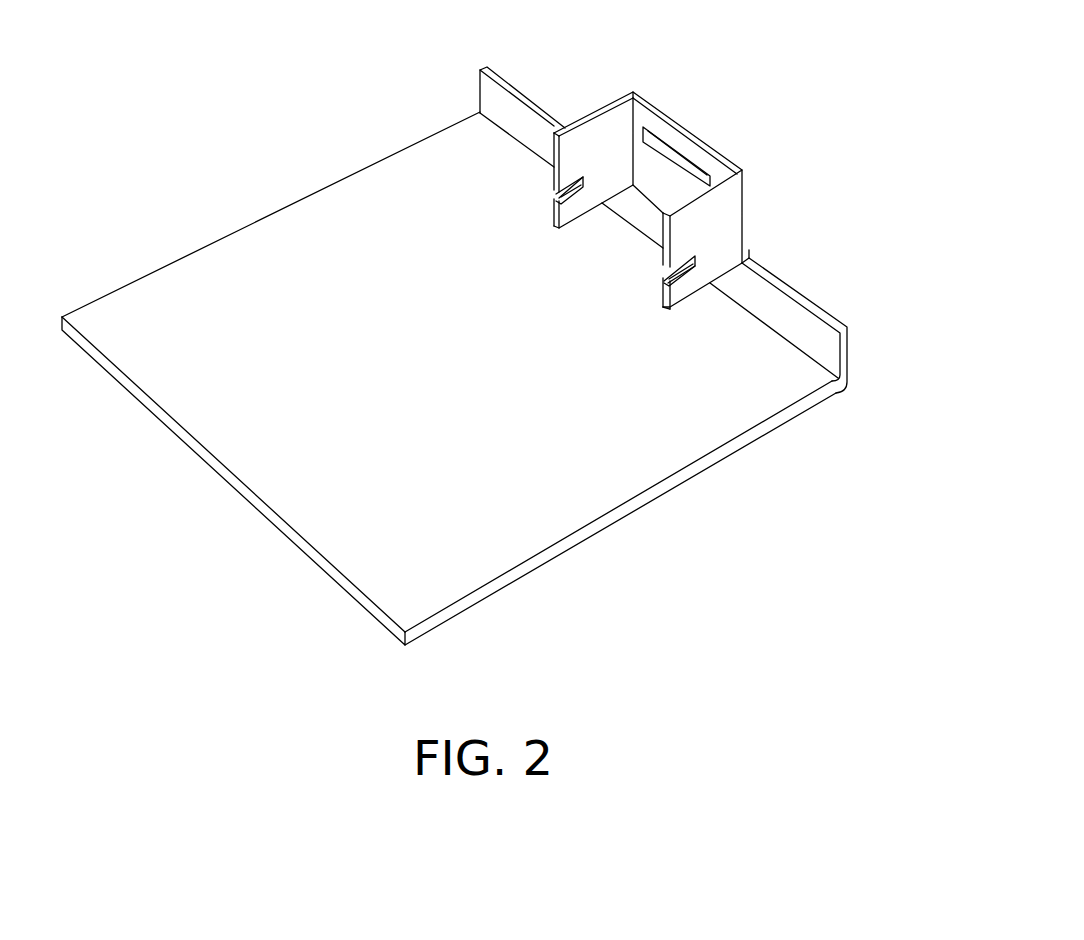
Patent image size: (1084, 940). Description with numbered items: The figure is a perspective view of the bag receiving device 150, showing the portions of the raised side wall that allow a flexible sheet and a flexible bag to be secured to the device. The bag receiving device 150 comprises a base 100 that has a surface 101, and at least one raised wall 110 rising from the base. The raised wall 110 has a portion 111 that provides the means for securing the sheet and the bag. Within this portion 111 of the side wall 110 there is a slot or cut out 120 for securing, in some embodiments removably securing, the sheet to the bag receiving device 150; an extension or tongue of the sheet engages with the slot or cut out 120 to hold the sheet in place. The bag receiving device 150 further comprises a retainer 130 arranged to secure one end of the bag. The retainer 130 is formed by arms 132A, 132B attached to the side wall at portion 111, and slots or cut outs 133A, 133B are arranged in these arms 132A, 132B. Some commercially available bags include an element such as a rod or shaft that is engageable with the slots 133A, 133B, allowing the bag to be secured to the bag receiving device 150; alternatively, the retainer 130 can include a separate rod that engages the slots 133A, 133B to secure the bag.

The base 100 is at (450, 378).
The surface 101 is at (378, 532).
The raised wall 110 is at (852, 335).
The portion 111 is at (722, 134).
The slot or cut out 120 is at (685, 177).
The retainer 130 is at (612, 205).
The arm 132A is at (674, 257).
The arm 132B is at (529, 158).
The slot or cut out 133A is at (662, 272).
The slot or cut out 133B is at (562, 192).
The bag receiving device 150 is at (496, 349).